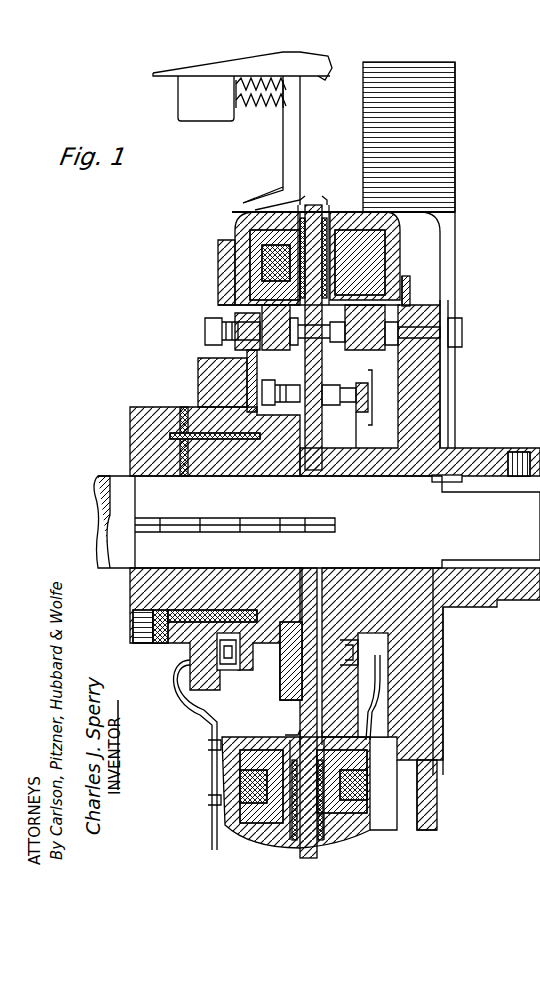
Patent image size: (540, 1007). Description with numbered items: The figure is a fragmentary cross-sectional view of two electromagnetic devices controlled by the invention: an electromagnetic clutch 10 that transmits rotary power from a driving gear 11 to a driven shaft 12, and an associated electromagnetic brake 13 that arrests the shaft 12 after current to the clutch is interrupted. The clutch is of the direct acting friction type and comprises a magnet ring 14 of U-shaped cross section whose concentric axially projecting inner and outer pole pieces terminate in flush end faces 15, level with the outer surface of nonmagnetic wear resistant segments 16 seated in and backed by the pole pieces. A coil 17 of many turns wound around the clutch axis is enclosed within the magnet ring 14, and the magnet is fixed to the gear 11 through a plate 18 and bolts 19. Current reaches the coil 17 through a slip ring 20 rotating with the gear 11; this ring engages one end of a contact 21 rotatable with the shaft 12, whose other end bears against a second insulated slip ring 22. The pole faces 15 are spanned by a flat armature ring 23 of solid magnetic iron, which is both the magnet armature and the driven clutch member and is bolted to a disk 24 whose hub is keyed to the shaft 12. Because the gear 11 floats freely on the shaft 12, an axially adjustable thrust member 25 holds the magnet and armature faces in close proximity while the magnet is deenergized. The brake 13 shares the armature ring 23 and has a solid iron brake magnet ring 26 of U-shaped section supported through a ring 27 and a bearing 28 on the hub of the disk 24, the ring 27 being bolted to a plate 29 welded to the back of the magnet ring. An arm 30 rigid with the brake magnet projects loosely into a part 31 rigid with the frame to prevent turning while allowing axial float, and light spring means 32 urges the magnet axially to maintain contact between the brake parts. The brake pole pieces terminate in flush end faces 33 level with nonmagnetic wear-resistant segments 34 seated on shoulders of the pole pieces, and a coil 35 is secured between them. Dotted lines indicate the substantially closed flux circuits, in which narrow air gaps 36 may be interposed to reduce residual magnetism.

The electromagnetic clutch 10 is at (355, 212).
The gear 11 is at (456, 137).
The shaft 12 is at (96, 482).
The electromagnetic brake 13 is at (236, 222).
The magnet ring 14 is at (388, 222).
The end faces 15 is at (312, 740).
The nonmagnetic wear resistant segments 16 is at (322, 840).
The coil 17 is at (402, 795).
The plate 18 is at (405, 280).
The bolts 19 is at (462, 333).
The slip ring 20 is at (358, 380).
The contact 21 is at (352, 410).
The second insulated slip ring 22 is at (272, 378).
The armature ring 23 is at (302, 702).
The disk 24 is at (340, 660).
The axially adjustable thrust member 25 is at (518, 452).
The brake magnet ring 26 is at (250, 240).
The ring 27 is at (198, 368).
The bearing 28 is at (196, 430).
The plate 29 is at (220, 292).
The arm 30 is at (300, 108).
The part 31 is at (318, 80).
The spring means 32 is at (258, 112).
The end faces 33 is at (286, 732).
The nonmagnetic wear-resistant segments 34 is at (270, 835).
The coil 35 is at (262, 258).
The air gaps 36 is at (360, 730).